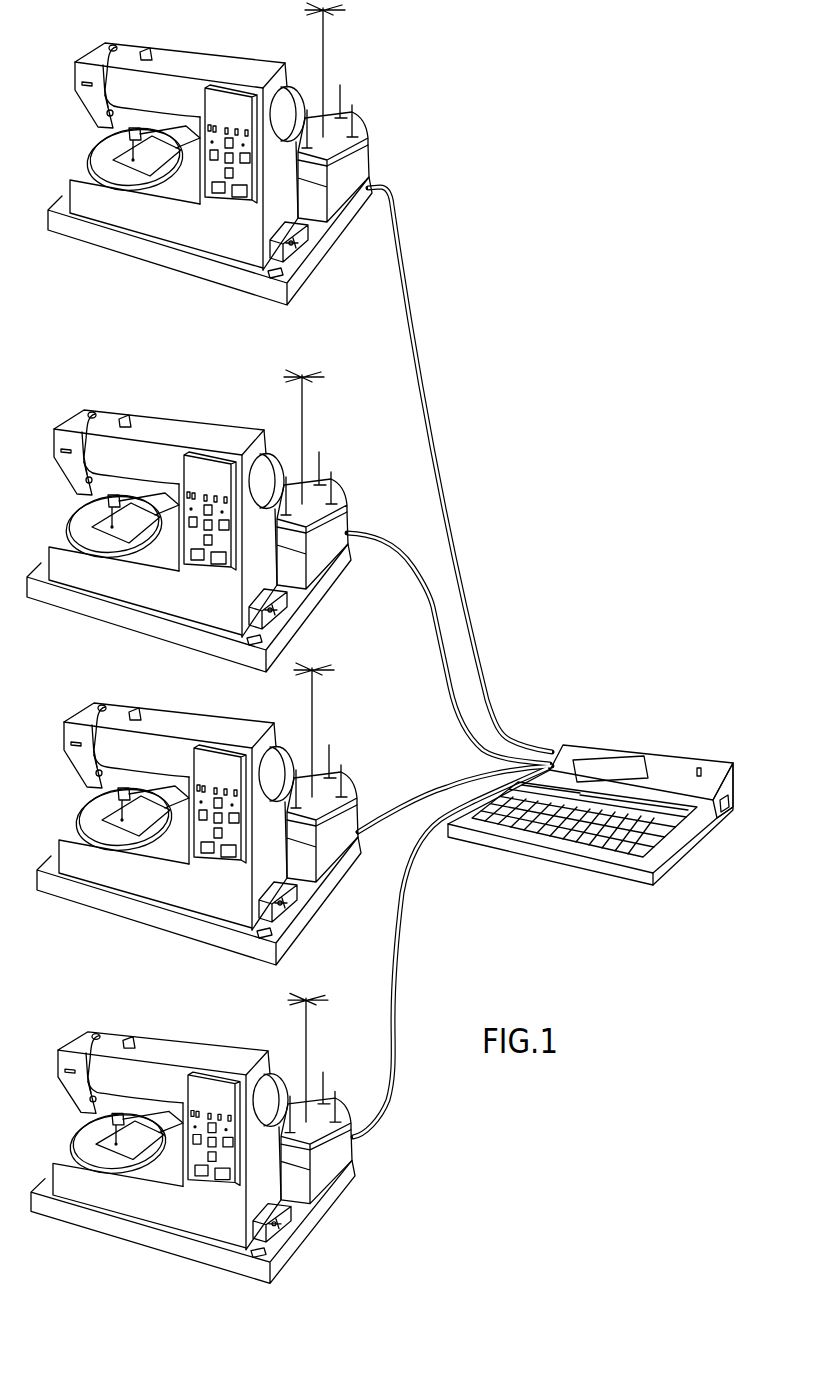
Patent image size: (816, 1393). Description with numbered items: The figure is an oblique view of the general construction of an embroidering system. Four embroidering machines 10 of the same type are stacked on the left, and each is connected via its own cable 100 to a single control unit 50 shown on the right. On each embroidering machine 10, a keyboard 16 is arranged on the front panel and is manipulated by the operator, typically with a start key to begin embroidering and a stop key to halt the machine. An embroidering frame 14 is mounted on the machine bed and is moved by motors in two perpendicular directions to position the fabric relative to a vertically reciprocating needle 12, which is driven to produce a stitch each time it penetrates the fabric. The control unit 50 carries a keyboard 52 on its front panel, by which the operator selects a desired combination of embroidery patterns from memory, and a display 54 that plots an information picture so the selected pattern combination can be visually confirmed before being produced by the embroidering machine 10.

The embroidering machine 10 is at (199, 643).
The needle 12 is at (90, 170).
The embroidering frame 14 is at (93, 157).
The keyboard 16 is at (215, 193).
The control unit 50 is at (590, 800).
The keyboard 52 is at (663, 838).
The display 54 is at (615, 765).
The cable 100 is at (404, 278).